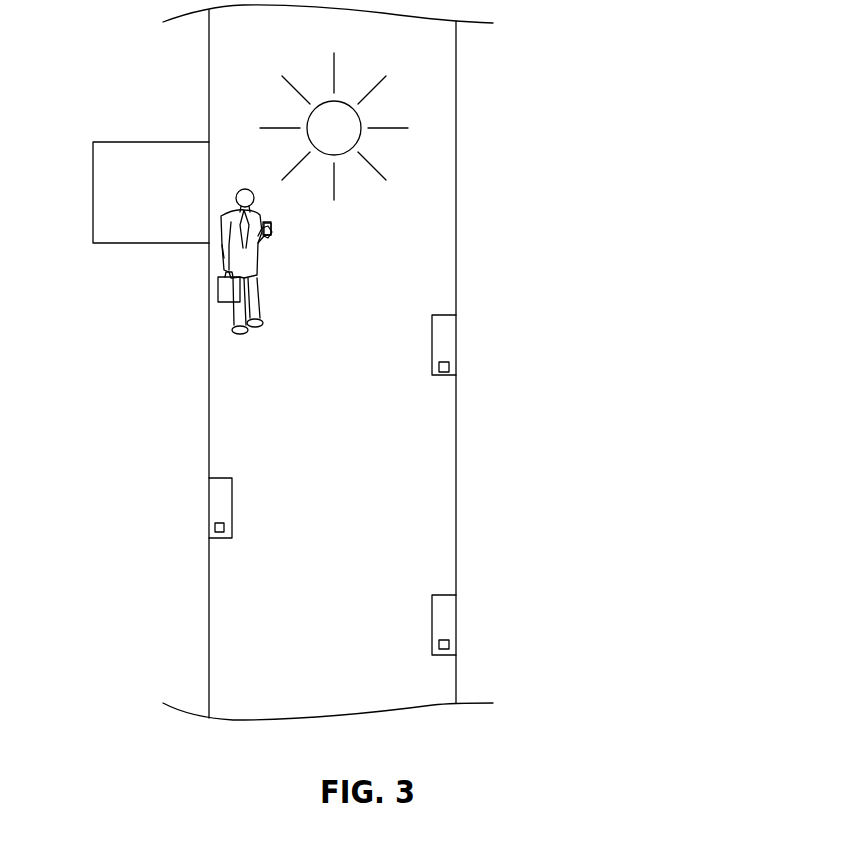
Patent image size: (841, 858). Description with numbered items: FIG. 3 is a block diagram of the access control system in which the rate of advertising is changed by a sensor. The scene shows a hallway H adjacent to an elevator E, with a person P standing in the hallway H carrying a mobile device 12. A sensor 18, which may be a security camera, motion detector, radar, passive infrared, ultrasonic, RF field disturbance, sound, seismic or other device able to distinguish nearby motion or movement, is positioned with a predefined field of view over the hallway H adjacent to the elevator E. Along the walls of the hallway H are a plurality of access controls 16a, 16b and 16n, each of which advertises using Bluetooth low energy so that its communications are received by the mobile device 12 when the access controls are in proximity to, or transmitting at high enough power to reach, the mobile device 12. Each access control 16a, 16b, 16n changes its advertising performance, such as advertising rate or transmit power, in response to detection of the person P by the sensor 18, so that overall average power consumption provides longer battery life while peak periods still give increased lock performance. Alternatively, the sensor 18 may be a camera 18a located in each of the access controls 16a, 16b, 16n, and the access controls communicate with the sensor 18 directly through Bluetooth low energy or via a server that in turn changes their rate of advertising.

The mobile device 12 is at (273, 226).
The sensor 18 is at (358, 113).
The access control 16a is at (448, 341).
The access control 16b is at (218, 490).
The access control 16n is at (445, 620).
The camera 18a is at (450, 366).
The person P is at (222, 263).
The elevator E is at (108, 167).
The hallway H is at (333, 348).